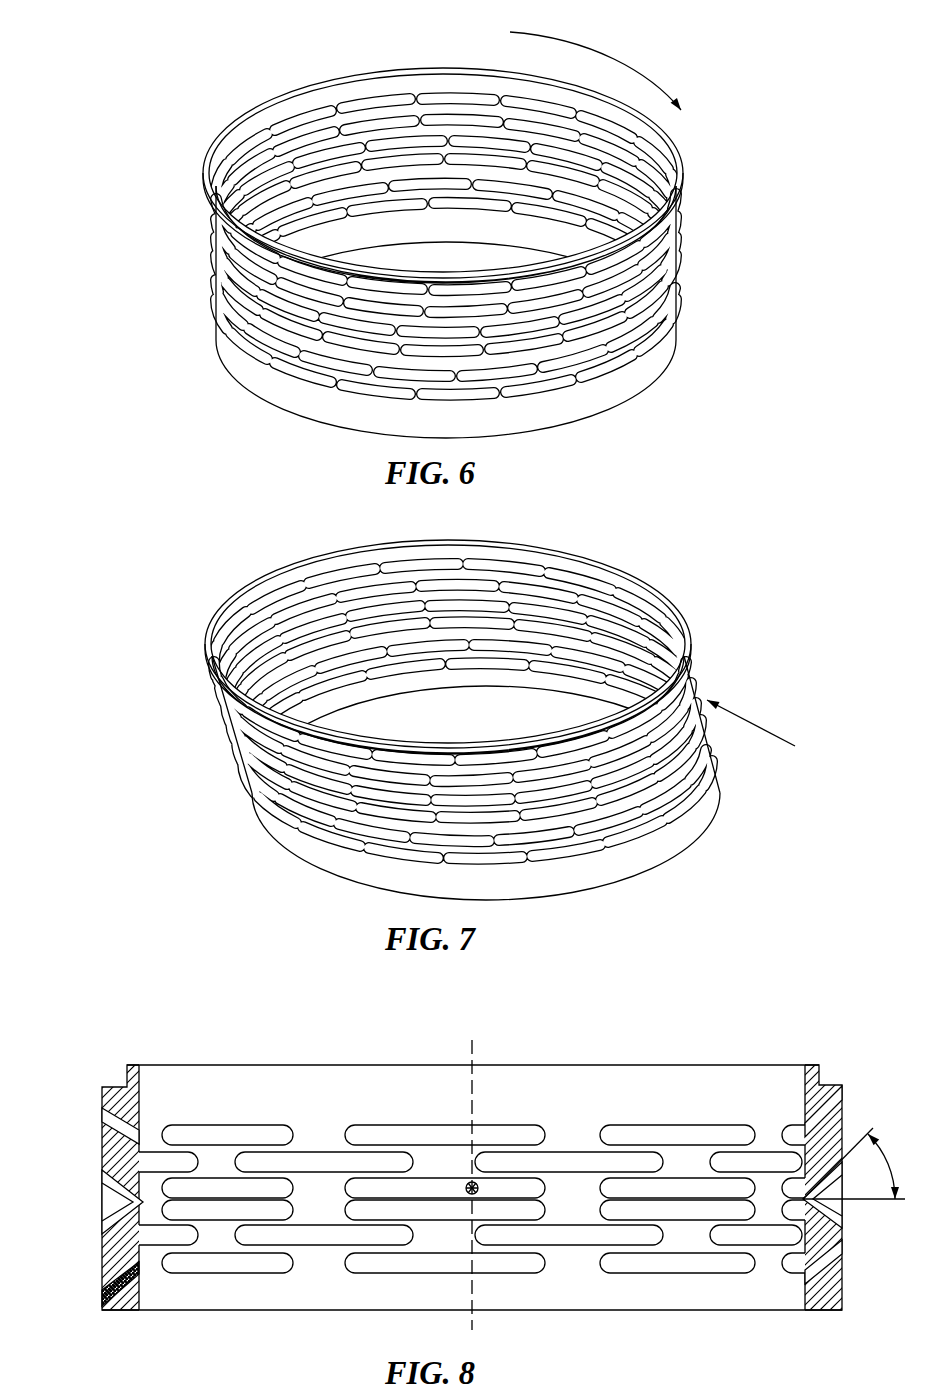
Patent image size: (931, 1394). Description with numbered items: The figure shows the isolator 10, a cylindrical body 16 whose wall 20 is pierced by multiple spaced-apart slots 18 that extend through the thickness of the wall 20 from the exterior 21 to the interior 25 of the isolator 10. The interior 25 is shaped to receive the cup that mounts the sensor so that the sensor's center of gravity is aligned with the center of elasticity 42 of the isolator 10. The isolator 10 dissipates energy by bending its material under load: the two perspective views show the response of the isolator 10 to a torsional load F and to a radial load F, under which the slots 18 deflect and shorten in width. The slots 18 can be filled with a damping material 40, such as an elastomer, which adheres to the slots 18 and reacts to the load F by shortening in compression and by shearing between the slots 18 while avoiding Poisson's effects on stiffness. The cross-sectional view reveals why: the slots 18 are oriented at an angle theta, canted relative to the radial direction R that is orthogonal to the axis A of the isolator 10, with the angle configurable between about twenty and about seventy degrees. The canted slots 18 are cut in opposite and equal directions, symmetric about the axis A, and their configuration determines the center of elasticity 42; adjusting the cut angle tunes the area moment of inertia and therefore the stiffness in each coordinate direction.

In FIG. 6, the isolator 10 is at (178, 82).
In FIG. 7, the isolator 10 is at (178, 545).
In FIG. 8, the isolator 10 is at (178, 1035).
In FIG. 6, the cylindrical body 16 is at (688, 250).
In FIG. 7, the cylindrical body 16 is at (217, 723).
In FIG. 8, the cylindrical body 16 is at (822, 1068).
In FIG. 6, the slots 18 is at (298, 348).
In FIG. 7, the slots 18 is at (292, 768).
In FIG. 8, the slots 18 is at (103, 1097).
In FIG. 6, the wall 20 is at (647, 318).
In FIG. 7, the wall 20 is at (710, 735).
In FIG. 8, the wall 20 is at (102, 1197).
In FIG. 6, the exterior 21 is at (149, 124).
In FIG. 7, the exterior 21 is at (746, 617).
In FIG. 6, the interior 25 is at (370, 232).
In FIG. 7, the interior 25 is at (370, 695).
In FIG. 8, the damping material 40 is at (103, 1290).
In FIG. 8, the center of elasticity 42 is at (480, 1186).
In FIG. 8, the axis A is at (470, 1040).
In FIG. 6, the load force F is at (623, 56).
In FIG. 7, the load force F is at (762, 726).
In FIG. 8, the radial direction R is at (878, 1200).